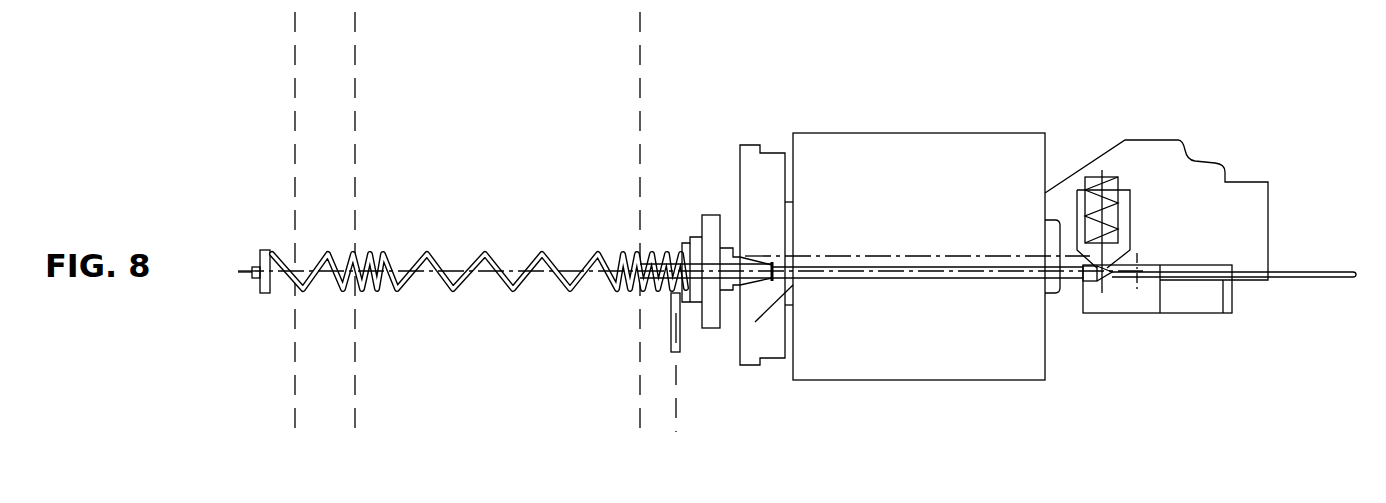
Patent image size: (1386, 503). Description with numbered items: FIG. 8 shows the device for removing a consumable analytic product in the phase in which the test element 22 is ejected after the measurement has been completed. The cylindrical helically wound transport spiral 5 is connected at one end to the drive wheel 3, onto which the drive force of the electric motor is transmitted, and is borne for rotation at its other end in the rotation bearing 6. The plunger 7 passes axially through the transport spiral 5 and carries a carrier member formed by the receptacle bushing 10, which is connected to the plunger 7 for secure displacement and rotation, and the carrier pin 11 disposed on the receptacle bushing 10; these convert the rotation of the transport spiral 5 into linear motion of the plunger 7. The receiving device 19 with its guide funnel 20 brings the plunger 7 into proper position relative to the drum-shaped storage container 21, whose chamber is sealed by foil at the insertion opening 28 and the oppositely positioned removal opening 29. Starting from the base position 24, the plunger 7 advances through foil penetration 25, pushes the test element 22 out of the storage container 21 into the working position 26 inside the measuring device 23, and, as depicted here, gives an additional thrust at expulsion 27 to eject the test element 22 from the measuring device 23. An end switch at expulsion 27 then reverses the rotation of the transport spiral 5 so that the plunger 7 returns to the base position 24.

The drive wheel 3 is at (708, 320).
The transport spiral 5 is at (542, 253).
The rotation bearing 6 is at (263, 283).
The plunger 7 is at (905, 268).
The receptacle bushing 10 is at (680, 247).
The carrier pin 11 is at (672, 343).
The receiving device 19 is at (753, 157).
The guide funnel 20 is at (752, 263).
The storage container 21 is at (977, 167).
The test element 22 is at (1300, 277).
The measuring device 23 is at (1155, 160).
The base position 24 is at (292, 383).
The foil penetration 25 is at (358, 385).
The working position 26 is at (640, 407).
The expulsion 27 is at (677, 408).
The insertion opening 28 is at (755, 322).
The removal opening 29 is at (1050, 295).